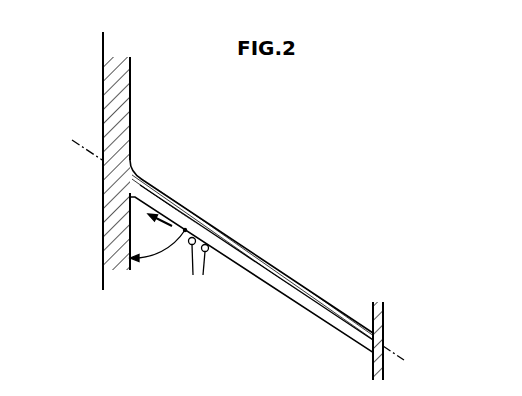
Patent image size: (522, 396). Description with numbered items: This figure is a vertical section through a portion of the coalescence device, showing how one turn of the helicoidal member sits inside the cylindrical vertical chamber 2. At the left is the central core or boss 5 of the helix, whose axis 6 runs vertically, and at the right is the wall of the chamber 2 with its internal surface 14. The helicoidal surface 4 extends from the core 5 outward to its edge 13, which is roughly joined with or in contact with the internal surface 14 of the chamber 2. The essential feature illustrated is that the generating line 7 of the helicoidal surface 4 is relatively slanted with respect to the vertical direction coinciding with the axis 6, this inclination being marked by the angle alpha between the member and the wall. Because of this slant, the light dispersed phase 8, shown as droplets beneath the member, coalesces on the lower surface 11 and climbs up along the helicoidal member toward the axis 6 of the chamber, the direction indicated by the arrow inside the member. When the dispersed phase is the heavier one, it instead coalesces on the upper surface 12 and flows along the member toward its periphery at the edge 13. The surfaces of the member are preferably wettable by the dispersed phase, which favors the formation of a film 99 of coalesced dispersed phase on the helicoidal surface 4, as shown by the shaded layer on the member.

The cylindrical vertical chamber 2 is at (386, 327).
The helicoidal surface 4 is at (278, 186).
The central core or boss of the helix 5 is at (128, 96).
The axis of the helix 6 is at (103, 40).
The generating line 7 is at (410, 368).
The light dispersed phase 8 is at (199, 270).
The lower surface 11 is at (268, 284).
The upper surface 12 is at (279, 268).
The edge 13 is at (368, 349).
The internal surface 14 is at (373, 318).
The film 99 is at (159, 209).
The inclination angle alpha is at (158, 251).